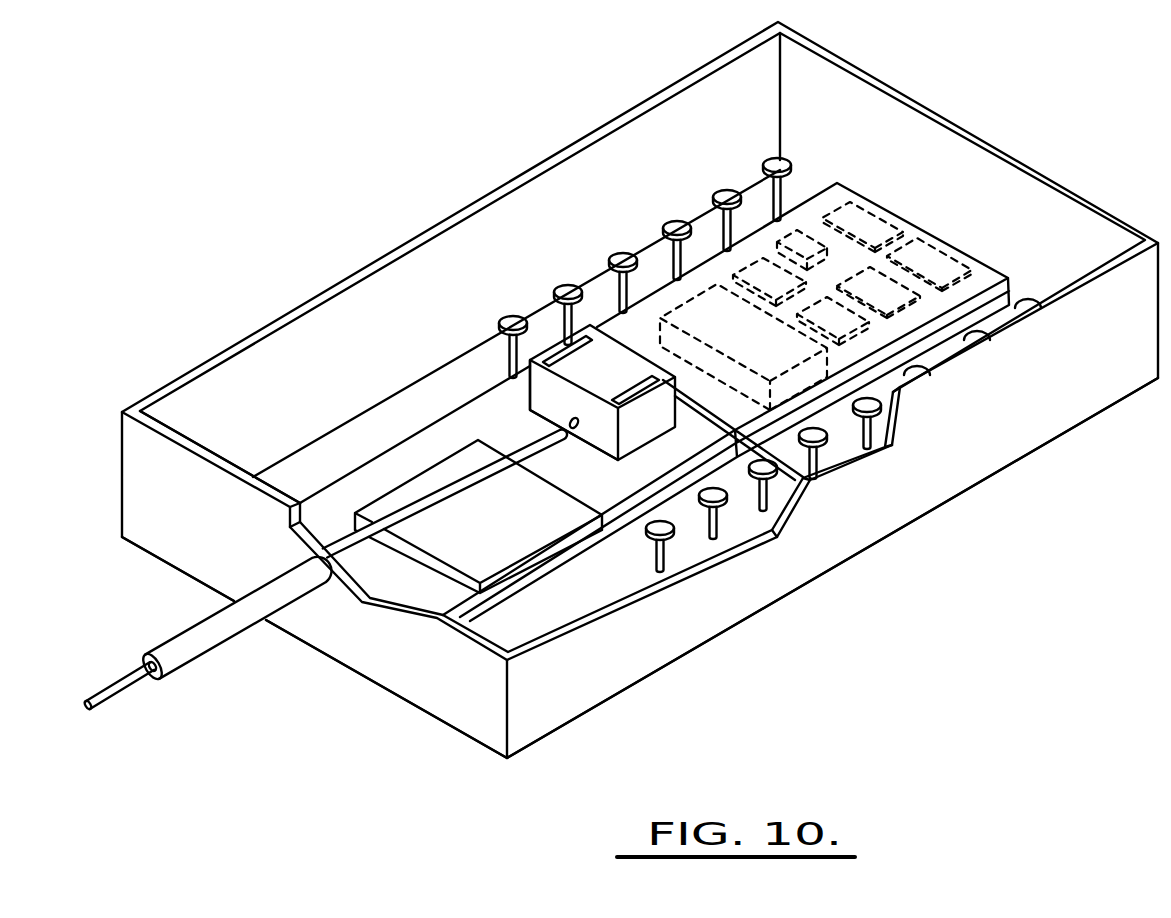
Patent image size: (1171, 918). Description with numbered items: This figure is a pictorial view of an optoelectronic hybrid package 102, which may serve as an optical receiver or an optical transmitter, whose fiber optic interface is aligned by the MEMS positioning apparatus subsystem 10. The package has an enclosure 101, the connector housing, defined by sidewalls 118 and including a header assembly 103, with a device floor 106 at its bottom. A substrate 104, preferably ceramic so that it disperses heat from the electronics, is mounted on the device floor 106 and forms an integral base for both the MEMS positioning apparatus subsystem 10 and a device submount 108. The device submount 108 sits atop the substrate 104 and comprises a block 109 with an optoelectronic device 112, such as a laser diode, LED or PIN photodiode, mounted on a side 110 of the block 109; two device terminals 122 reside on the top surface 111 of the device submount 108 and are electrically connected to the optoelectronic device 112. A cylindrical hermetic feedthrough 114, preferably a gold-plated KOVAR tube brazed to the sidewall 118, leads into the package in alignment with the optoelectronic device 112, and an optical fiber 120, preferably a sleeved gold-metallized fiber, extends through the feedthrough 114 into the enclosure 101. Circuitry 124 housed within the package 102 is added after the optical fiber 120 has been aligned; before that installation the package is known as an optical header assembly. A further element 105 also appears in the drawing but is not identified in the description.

The MEMS positioning apparatus subsystem 10 is at (528, 537).
The enclosure 101 is at (396, 449).
The optoelectronic hybrid package 102 is at (926, 568).
The header assembly 103 is at (458, 762).
The substrate 104 is at (748, 470).
The electrical pins 105 is at (682, 472).
The device floor 106 is at (832, 417).
The device submount 108 is at (612, 322).
The block 109 is at (556, 353).
The side of the block 110 is at (528, 400).
The top surface of device submount 111 is at (572, 372).
The optoelectronic device 112 is at (582, 431).
The cylindrical hermetic feedthrough 114 is at (205, 637).
The sidewalls 118 is at (140, 457).
The optical fiber 120 is at (335, 548).
The device terminals 122 is at (801, 477).
The circuitry 124 is at (649, 349).